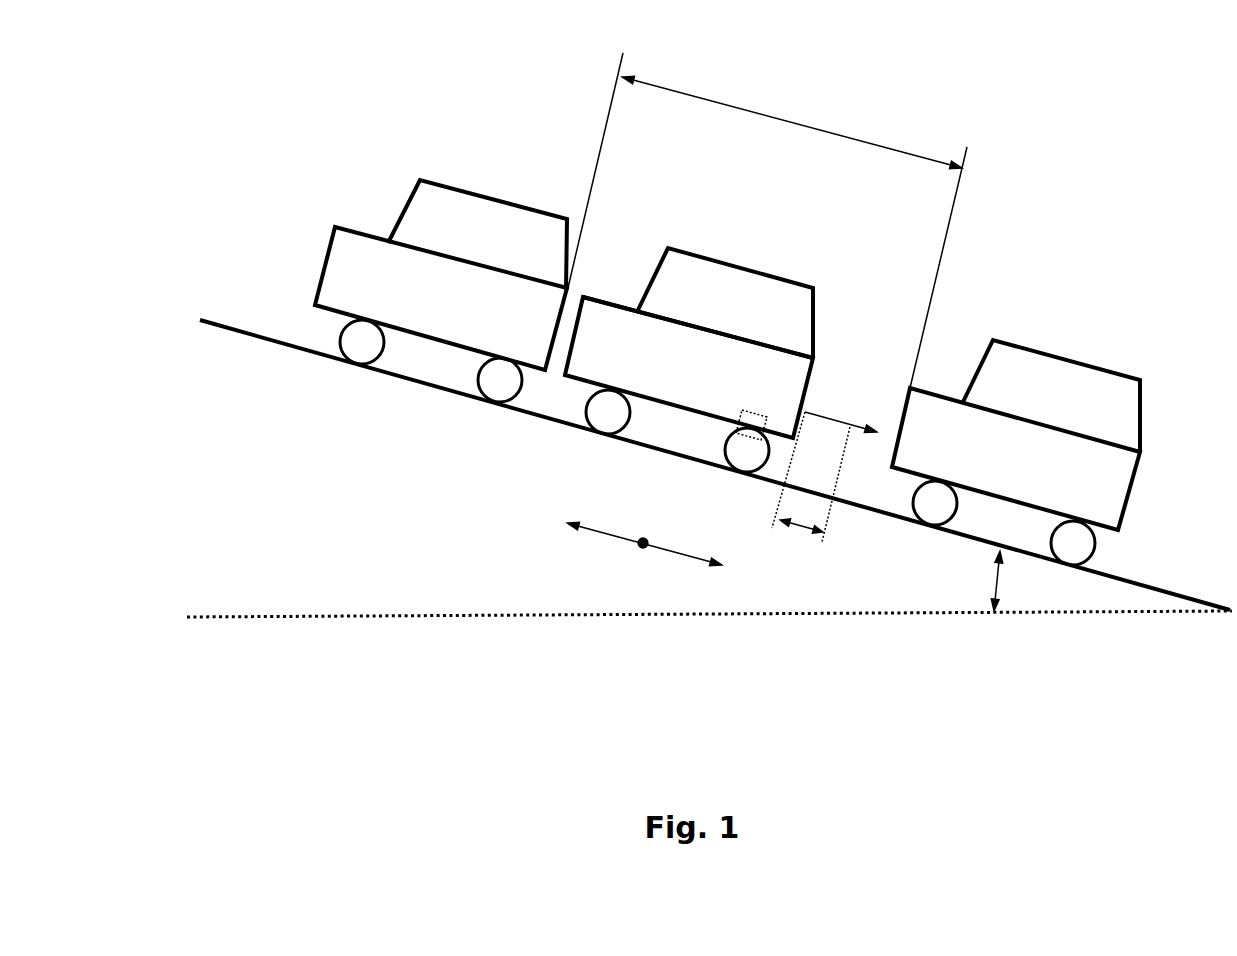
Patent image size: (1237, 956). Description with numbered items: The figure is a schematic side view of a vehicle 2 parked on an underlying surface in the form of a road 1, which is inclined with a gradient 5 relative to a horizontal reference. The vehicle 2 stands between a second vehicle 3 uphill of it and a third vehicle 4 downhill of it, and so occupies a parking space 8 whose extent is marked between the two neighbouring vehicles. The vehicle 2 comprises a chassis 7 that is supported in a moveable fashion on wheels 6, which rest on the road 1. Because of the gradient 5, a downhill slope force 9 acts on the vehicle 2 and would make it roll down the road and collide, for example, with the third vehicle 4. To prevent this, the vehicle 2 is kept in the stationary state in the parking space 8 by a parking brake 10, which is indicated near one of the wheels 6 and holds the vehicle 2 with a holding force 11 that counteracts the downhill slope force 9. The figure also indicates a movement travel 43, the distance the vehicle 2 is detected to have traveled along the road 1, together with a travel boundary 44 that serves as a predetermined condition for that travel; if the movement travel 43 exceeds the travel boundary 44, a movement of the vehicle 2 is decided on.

The road 1 is at (548, 422).
The vehicle 2 is at (737, 263).
The second vehicle 3 is at (492, 195).
The third vehicle 4 is at (1060, 353).
The gradient 5 is at (1093, 602).
The wheels 6 is at (607, 423).
The chassis 7 is at (622, 308).
The parking space 8 is at (792, 122).
The downhill slope force 9 is at (680, 555).
The parking brake 10 is at (753, 411).
The holding force 11 is at (607, 535).
The movement travel 43 is at (830, 417).
The travel boundary 44 is at (802, 528).